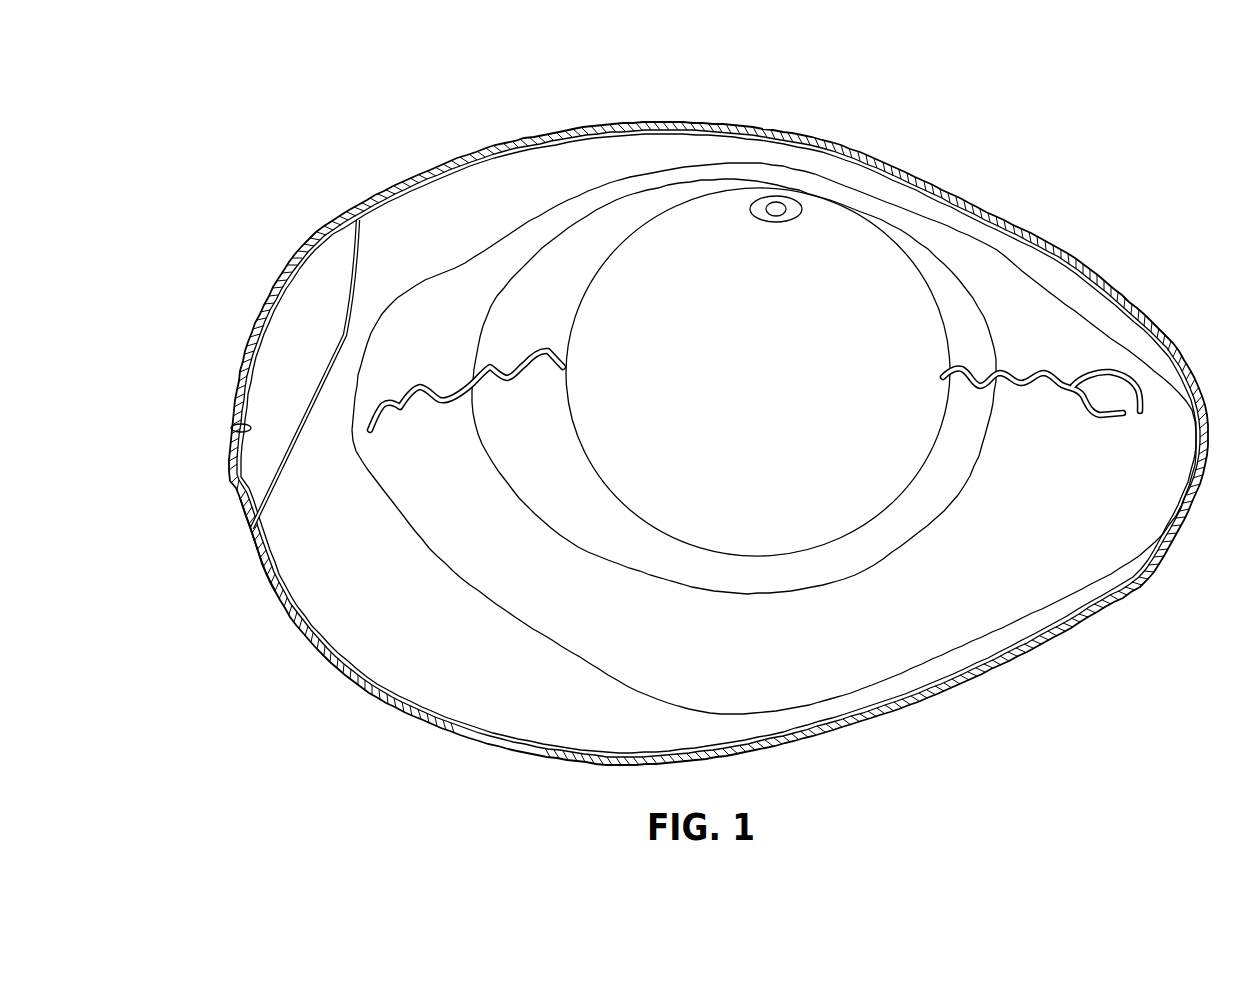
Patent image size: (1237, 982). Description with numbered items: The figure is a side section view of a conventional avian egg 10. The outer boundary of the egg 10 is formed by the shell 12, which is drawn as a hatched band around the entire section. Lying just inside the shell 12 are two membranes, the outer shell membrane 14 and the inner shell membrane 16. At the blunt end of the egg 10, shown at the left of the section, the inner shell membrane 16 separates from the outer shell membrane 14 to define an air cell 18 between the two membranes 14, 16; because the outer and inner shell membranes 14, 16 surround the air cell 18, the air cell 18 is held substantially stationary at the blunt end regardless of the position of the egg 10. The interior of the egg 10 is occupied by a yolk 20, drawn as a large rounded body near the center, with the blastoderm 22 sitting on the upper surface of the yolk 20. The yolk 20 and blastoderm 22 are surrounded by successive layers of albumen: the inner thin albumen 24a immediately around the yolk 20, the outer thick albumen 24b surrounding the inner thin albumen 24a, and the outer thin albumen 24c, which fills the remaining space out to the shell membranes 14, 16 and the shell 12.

The avian egg 10 is at (958, 173).
The shell 12 is at (1150, 312).
The outer shell membrane 14 is at (232, 428).
The inner shell membrane 16 is at (340, 325).
The air cell 18 is at (255, 482).
The yolk 20 is at (647, 215).
The blastoderm 22 is at (770, 197).
The inner thin albumen 24a is at (943, 268).
The outer thick albumen 24b is at (935, 622).
The outer thin albumen 24c is at (485, 703).